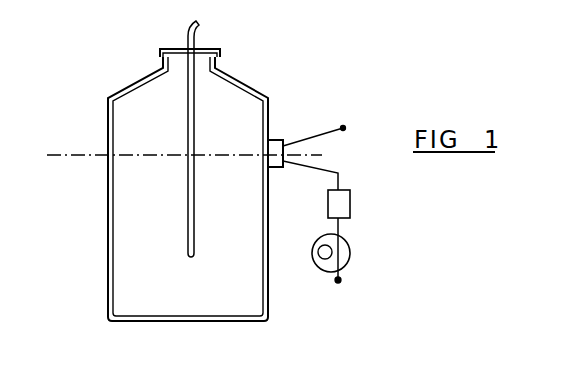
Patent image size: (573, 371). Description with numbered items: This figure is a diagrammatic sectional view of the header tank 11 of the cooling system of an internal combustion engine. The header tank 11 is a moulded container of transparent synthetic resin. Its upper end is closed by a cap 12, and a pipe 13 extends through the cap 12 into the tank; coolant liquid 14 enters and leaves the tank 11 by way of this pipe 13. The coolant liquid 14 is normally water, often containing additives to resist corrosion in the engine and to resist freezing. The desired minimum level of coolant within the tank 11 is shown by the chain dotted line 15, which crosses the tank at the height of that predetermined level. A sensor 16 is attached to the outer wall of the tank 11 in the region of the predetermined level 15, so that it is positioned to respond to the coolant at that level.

The header tank 11 is at (109, 220).
The cap 12 is at (205, 49).
The pipe 13 is at (188, 96).
The coolant liquid 14 is at (125, 275).
The chain dotted line 15 is at (71, 153).
The sensor 16 is at (283, 140).